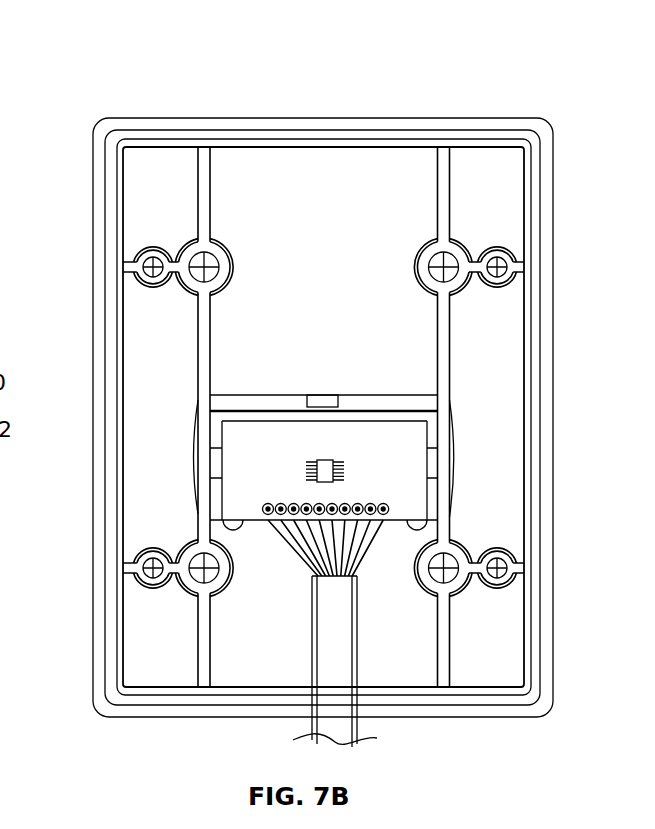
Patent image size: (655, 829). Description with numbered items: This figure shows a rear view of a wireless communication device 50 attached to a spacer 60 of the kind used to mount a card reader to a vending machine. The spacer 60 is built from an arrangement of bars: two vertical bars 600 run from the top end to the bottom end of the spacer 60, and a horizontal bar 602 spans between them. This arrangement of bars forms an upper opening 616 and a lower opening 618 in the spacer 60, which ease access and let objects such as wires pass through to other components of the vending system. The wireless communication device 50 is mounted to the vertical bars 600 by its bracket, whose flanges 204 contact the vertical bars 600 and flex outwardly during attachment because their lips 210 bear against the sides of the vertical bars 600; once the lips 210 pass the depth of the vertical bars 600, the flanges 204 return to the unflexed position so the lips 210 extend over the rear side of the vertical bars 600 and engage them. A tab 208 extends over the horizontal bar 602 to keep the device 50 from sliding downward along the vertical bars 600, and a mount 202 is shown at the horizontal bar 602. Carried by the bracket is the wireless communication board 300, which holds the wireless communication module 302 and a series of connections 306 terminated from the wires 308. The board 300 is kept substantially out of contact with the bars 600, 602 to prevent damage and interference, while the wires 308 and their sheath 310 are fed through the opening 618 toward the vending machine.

The spacer 60 is at (107, 67).
The wireless communication device 50 is at (460, 408).
The vertical bars 600 is at (203, 350).
The horizontal bar 602 is at (208, 417).
The opening 616 is at (352, 175).
The opening 618 is at (268, 668).
The circuit board mount 202 is at (402, 393).
The flanges 204 is at (217, 440).
The tab 208 is at (331, 400).
The lips 210 is at (213, 472).
The wireless communication board 300 is at (243, 483).
The wireless communication module 302 is at (320, 460).
The connections 306 is at (356, 502).
The wires 308 is at (293, 552).
The sheath 310 is at (338, 667).